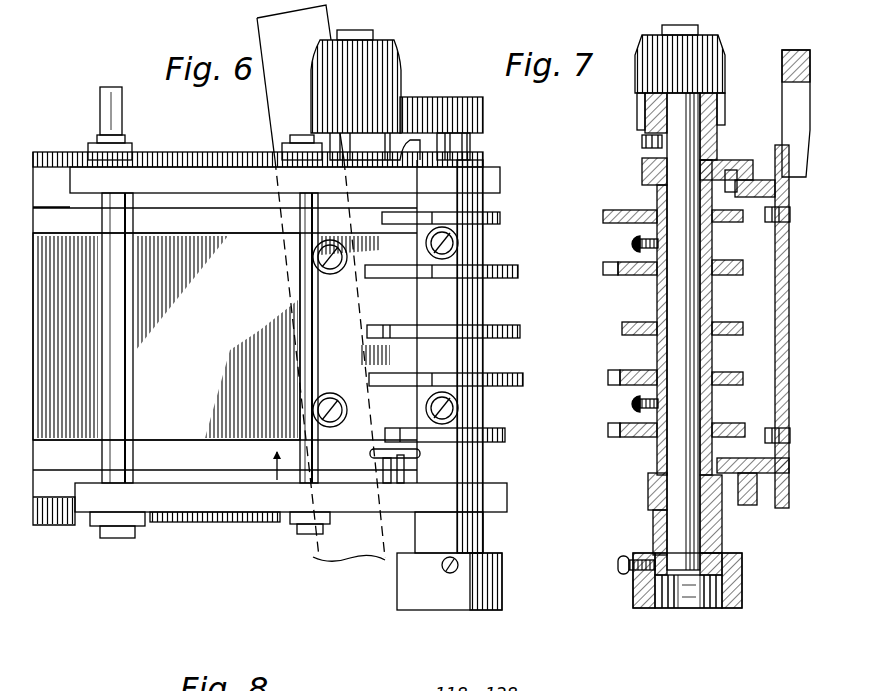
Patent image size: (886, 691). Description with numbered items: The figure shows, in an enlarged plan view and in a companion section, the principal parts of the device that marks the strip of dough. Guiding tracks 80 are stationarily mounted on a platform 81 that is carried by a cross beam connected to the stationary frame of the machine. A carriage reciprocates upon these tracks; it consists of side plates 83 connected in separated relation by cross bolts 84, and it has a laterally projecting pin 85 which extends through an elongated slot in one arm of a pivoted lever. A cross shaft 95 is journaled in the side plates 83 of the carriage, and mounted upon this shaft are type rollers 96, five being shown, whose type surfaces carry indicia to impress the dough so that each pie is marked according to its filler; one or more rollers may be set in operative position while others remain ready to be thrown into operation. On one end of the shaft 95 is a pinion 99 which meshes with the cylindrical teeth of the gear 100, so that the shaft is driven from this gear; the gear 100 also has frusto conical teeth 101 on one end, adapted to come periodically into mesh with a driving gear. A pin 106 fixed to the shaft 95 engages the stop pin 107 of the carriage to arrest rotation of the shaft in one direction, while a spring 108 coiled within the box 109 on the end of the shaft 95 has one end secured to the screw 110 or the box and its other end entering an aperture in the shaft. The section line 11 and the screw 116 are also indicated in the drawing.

In FIG. 6, the guiding tracks 80 is at (258, 352).
In FIG. 7, the guiding tracks 80 is at (727, 165).
In FIG. 6, the platform 81 is at (211, 336).
In FIG. 7, the platform 81 is at (774, 301).
In FIG. 6, the side plates 83 is at (288, 339).
In FIG. 6, the cross bolts 84 is at (298, 285).
In FIG. 6, the laterally projecting pin 85 is at (123, 128).
In FIG. 7, the cross shaft 95 is at (673, 193).
In FIG. 6, the type rollers 96 is at (492, 284).
In FIG. 7, the type rollers 96 is at (606, 262).
In FIG. 6, the pinion 99 is at (486, 124).
In FIG. 6, the gear 100 is at (321, 283).
In FIG. 7, the gear 100 is at (635, 88).
In FIG. 6, the frusto conical teeth 101 is at (400, 50).
In FIG. 7, the frusto conical teeth 101 is at (722, 52).
In FIG. 6, the section line 11 is at (368, 208).
In FIG. 6, the pin 106 is at (401, 462).
In FIG. 6, the stop pin 107 is at (378, 462).
In FIG. 7, the spring 108 is at (656, 608).
In FIG. 6, the box 109 is at (397, 586).
In FIG. 7, the box 109 is at (744, 588).
In FIG. 7, the screw 110 is at (622, 574).
In FIG. 6, the screw 116 is at (444, 573).